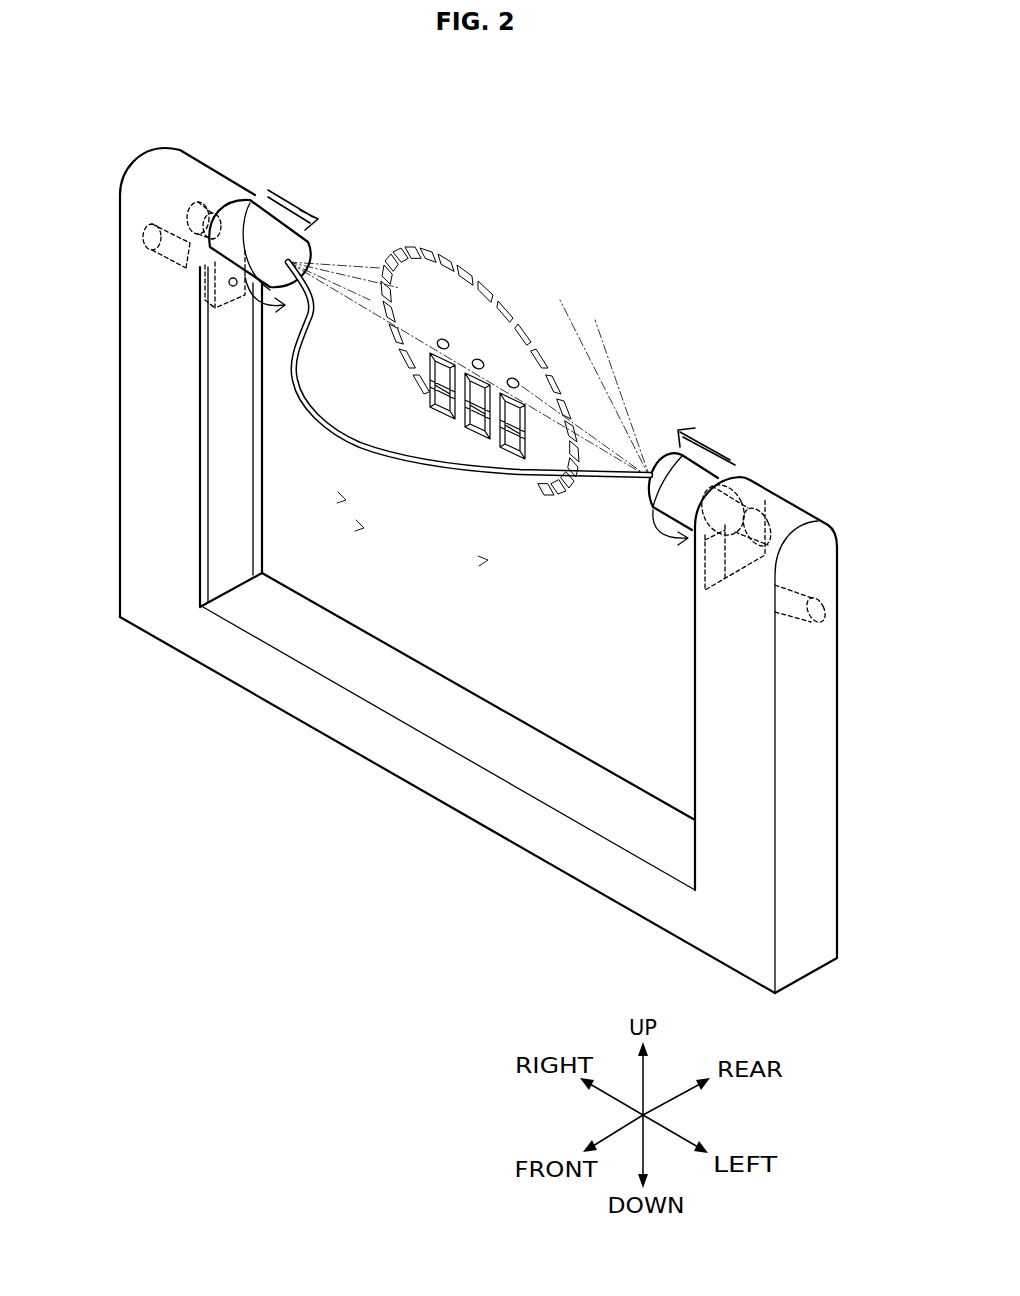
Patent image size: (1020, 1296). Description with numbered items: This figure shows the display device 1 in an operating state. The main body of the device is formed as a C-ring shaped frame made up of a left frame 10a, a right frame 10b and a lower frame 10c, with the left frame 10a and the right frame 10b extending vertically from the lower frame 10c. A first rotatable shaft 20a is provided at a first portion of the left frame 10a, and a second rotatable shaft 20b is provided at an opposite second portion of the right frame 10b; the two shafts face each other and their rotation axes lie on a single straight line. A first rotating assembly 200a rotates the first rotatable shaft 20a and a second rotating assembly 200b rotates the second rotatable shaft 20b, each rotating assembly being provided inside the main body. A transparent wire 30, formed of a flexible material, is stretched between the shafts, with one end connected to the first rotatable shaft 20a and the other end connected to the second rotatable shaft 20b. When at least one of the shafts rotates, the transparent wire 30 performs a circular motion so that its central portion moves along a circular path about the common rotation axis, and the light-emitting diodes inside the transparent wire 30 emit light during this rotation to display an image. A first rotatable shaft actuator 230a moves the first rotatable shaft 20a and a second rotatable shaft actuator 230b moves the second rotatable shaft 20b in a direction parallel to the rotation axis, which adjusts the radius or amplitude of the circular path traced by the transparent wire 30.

The display device 1 is at (518, 307).
The left frame 10a is at (133, 369).
The right frame 10b is at (812, 730).
The lower frame 10c is at (357, 738).
The first rotatable shaft 20a is at (255, 222).
The second rotatable shaft 20b is at (705, 484).
The first rotating assembly 200a is at (190, 195).
The second rotating assembly 200b is at (765, 527).
The first rotatable shaft actuator 230a is at (143, 243).
The second rotatable shaft actuator 230b is at (807, 586).
The transparent wire 30 is at (343, 432).